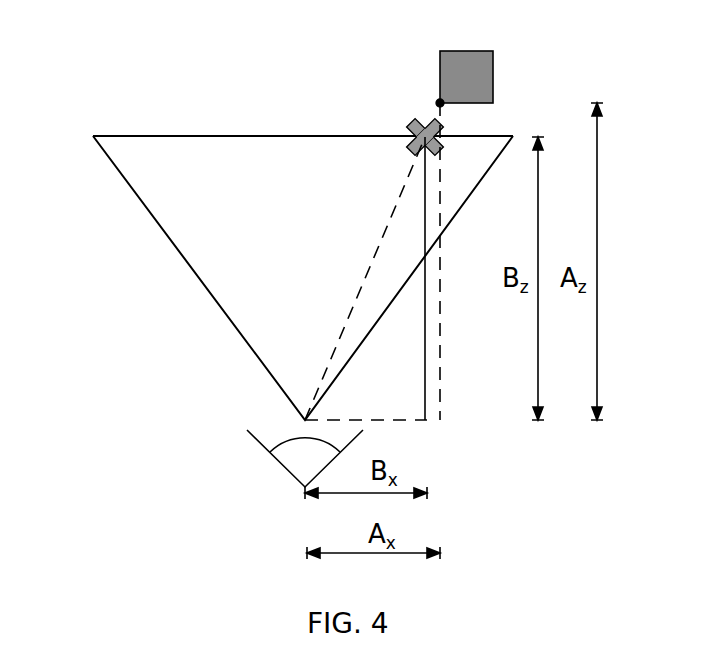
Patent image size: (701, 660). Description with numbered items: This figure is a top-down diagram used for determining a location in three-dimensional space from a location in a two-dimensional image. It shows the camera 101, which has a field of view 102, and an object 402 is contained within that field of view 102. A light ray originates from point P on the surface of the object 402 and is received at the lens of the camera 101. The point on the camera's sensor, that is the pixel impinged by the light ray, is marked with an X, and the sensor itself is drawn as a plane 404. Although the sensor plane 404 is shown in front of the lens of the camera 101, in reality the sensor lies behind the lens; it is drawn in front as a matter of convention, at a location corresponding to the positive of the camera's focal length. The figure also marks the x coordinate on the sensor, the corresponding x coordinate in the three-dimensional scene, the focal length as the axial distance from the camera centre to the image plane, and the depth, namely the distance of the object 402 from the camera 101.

The camera 101 is at (275, 452).
The field of view 102 is at (167, 235).
The object 402 is at (493, 78).
The plane 404 is at (310, 136).
The point P is at (440, 103).